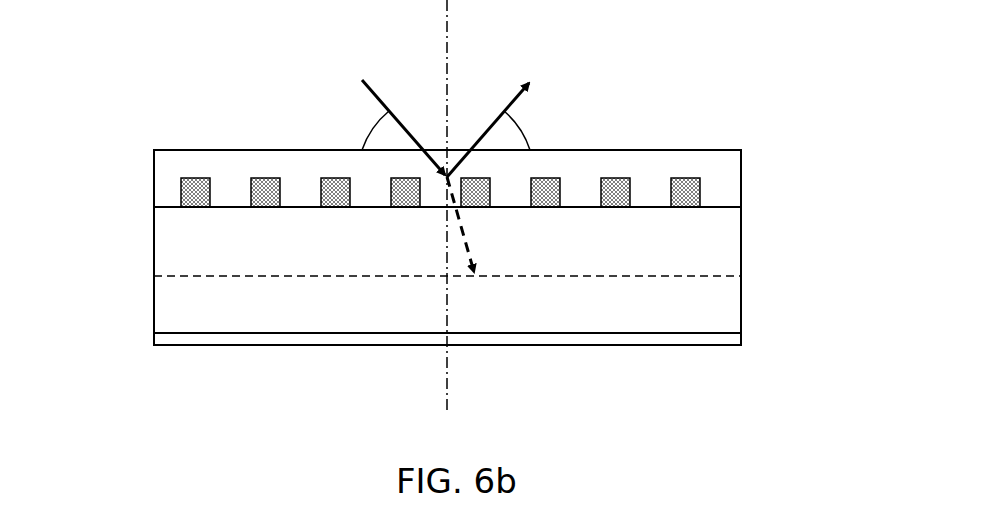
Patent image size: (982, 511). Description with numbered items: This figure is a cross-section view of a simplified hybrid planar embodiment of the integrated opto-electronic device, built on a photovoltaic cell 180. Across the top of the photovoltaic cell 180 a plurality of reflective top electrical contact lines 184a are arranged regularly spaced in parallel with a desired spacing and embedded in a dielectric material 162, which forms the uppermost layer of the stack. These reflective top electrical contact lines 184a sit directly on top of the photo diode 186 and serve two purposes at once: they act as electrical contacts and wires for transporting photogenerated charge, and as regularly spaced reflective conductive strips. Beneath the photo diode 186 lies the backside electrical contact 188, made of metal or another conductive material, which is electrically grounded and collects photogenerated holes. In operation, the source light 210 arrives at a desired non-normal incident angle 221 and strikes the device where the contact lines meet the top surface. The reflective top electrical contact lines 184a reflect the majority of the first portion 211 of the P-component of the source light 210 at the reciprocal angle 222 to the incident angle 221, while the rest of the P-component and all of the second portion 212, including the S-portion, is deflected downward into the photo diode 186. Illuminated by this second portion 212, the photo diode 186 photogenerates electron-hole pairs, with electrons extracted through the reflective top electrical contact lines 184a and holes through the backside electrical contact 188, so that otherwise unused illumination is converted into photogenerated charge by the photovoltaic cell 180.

The dielectric material 162 is at (741, 163).
The reflective top electrical contact lines 184a is at (687, 195).
The photo diode 186 is at (155, 207).
The photovoltaic cell 180 is at (98, 164).
The backside electrical contact 188 is at (599, 345).
The source light 210 is at (399, 116).
The first portion of the P-component of incident light 211 is at (500, 117).
The second portion of incident light 212 is at (474, 243).
The non-normal incident angle 221 is at (364, 148).
The reciprocal angle 222 is at (530, 130).